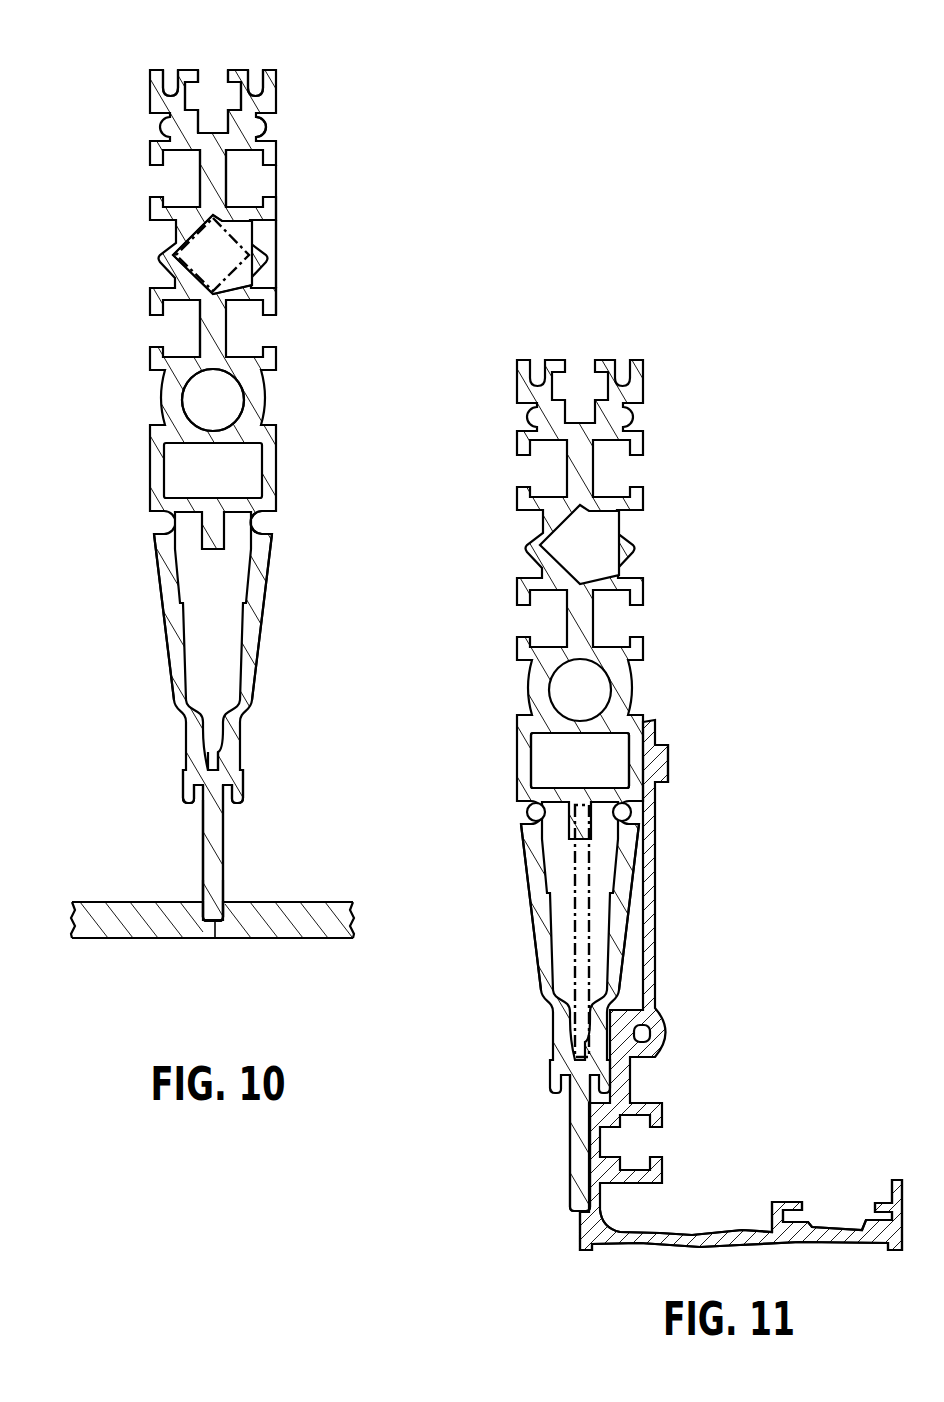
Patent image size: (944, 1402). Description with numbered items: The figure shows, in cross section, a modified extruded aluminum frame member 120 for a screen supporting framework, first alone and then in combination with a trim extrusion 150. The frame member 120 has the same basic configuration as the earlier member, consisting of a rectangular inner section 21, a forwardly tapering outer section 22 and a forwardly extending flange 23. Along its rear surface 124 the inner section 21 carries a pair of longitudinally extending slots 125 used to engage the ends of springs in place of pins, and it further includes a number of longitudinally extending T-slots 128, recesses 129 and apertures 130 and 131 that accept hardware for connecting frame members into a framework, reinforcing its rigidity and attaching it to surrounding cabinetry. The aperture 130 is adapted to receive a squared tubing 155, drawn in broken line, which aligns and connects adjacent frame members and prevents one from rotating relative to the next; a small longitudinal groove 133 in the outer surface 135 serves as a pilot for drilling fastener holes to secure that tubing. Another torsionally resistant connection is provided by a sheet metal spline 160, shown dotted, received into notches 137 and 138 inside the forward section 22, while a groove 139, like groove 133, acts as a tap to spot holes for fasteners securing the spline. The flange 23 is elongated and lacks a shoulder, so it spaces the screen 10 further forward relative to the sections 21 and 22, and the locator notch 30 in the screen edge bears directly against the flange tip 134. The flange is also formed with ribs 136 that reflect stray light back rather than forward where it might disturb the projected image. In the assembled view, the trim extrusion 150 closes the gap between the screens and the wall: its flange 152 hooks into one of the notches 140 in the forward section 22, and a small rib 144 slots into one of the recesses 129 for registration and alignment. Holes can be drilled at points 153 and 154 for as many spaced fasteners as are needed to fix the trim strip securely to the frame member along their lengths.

In FIG. 10, the screen 10 is at (148, 938).
In FIG. 10, the rectangular inner section 21 is at (278, 287).
In FIG. 10, the forwardly tapering outer section 22 is at (281, 588).
In FIG. 11, the forwardly tapering outer section 22 is at (530, 928).
In FIG. 10, the forwardly extending flange 23 is at (224, 842).
In FIG. 10, the locator notch 30 is at (207, 892).
In FIG. 10, the modified extruded aluminum frame member 120 is at (278, 398).
In FIG. 11, the modified extruded aluminum frame member 120 is at (657, 590).
In FIG. 10, the rear surface 124 is at (240, 68).
In FIG. 10, the longitudinally extending slots 125 is at (165, 68).
In FIG. 10, the T-slots 128 is at (266, 180).
In FIG. 10, the recesses 129 is at (268, 127).
In FIG. 11, the recesses 129 is at (632, 808).
In FIG. 10, the aperture 130 is at (190, 234).
In FIG. 10, the aperture 131 is at (183, 400).
In FIG. 10, the groove 133 is at (277, 250).
In FIG. 10, the flange tip 134 is at (228, 938).
In FIG. 10, the outer surface 135 is at (273, 213).
In FIG. 10, the ribs 136 is at (203, 853).
In FIG. 10, the notch 137 is at (264, 520).
In FIG. 10, the notch 138 is at (214, 758).
In FIG. 10, the groove 139 is at (240, 740).
In FIG. 11, the notches 140 is at (567, 1090).
In FIG. 11, the small rib 144 is at (625, 812).
In FIG. 11, the trim extrusion 150 is at (788, 1237).
In FIG. 11, the flange 152 is at (608, 1100).
In FIG. 11, the drilling point 153 is at (663, 760).
In FIG. 11, the drilling point 154 is at (640, 763).
In FIG. 10, the squared tubing 155 is at (244, 288).
In FIG. 11, the sheet metal spline 160 is at (590, 920).